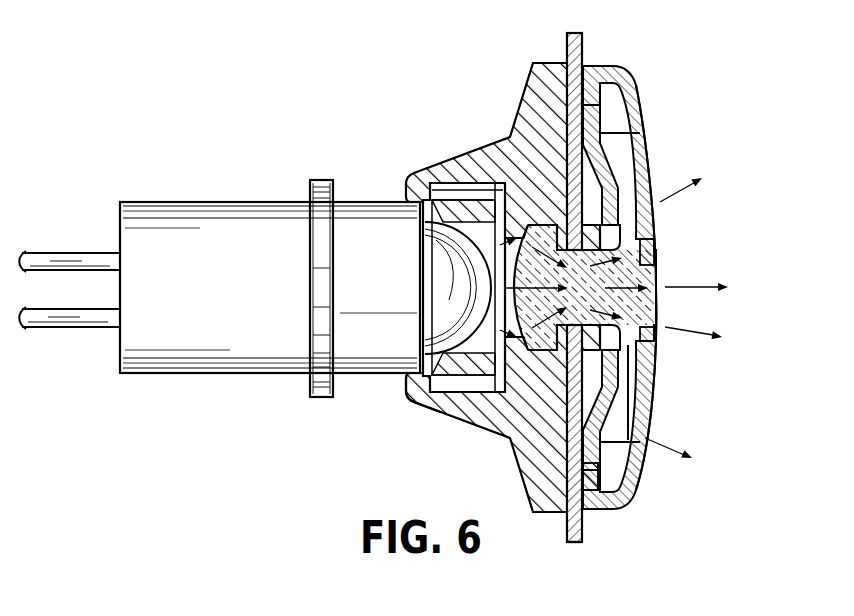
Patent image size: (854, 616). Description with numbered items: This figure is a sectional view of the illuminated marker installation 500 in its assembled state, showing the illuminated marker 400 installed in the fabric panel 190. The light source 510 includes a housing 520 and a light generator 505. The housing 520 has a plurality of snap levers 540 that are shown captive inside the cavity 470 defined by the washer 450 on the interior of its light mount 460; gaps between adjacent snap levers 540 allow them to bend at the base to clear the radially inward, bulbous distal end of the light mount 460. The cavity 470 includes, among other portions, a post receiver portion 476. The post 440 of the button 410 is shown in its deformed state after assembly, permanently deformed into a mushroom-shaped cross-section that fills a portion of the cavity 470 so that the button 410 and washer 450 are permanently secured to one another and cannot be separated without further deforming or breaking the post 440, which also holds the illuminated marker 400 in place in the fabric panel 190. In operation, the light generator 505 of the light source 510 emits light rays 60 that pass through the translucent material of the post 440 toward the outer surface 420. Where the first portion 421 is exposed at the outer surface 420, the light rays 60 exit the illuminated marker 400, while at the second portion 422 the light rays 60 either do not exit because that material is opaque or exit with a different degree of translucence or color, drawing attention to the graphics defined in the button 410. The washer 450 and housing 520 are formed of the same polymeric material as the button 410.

The illuminated marker installation 500 is at (270, 78).
The light source 510 is at (220, 194).
The housing 520 is at (227, 374).
The light generator 505 is at (440, 268).
The cavity 470 is at (473, 190).
The post 440 is at (415, 284).
The snap levers 540 is at (460, 398).
The washer 450 is at (512, 112).
The light mount 460 is at (418, 406).
The post receiver portion 476 is at (558, 205).
The illuminated marker 400 is at (645, 103).
The outer surface 420 is at (641, 68).
The first portion 421 is at (658, 222).
The second portion 422 is at (654, 383).
The button 410 is at (641, 500).
The fabric panel 190 is at (592, 530).
The light rays 60 is at (682, 190).